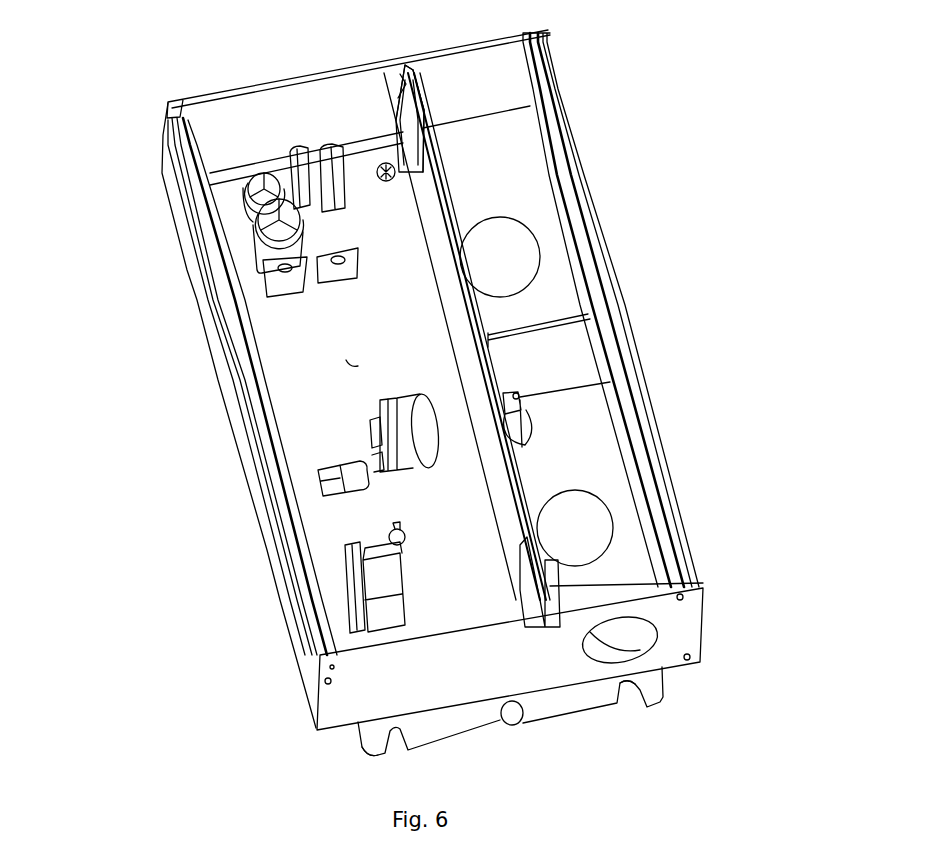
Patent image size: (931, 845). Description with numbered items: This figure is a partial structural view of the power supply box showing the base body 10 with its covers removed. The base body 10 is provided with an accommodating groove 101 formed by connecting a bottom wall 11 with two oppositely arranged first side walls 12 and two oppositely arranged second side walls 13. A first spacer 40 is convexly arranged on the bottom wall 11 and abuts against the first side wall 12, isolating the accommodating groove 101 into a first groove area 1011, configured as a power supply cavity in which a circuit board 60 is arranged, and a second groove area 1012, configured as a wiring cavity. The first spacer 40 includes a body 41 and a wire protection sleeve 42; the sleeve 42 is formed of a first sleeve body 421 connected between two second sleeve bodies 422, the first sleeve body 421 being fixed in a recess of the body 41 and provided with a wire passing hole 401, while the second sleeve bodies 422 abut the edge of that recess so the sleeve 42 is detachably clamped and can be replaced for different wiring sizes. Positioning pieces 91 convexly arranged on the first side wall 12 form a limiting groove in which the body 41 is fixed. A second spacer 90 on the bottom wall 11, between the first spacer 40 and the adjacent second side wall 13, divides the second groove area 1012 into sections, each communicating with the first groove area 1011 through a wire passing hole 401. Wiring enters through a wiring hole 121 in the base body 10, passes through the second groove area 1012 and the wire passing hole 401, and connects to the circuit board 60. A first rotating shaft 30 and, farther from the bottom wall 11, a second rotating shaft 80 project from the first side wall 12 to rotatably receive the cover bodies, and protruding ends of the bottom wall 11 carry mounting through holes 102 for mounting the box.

The base body 10 is at (172, 622).
The bottom wall 11 is at (377, 737).
The first side wall 12 is at (365, 697).
The second side wall 13 is at (302, 652).
The first rotating shaft 30 is at (170, 118).
The first spacer 40 is at (717, 70).
The body 41 is at (440, 177).
The wire protection sleeve 42 is at (669, 44).
The first sleeve body 421 is at (412, 67).
The second sleeve body 422 is at (428, 126).
The circuit board 60 is at (332, 477).
The second rotating shaft 80 is at (168, 102).
The second spacer 90 is at (570, 360).
The positioning piece 91 is at (397, 115).
The accommodating groove 101 is at (88, 307).
The first groove area 1011 is at (282, 376).
The second groove area 1012 is at (485, 307).
The mounting through hole 102 is at (533, 720).
The wiring hole 121 is at (524, 257).
The wire passing hole 401 is at (517, 570).